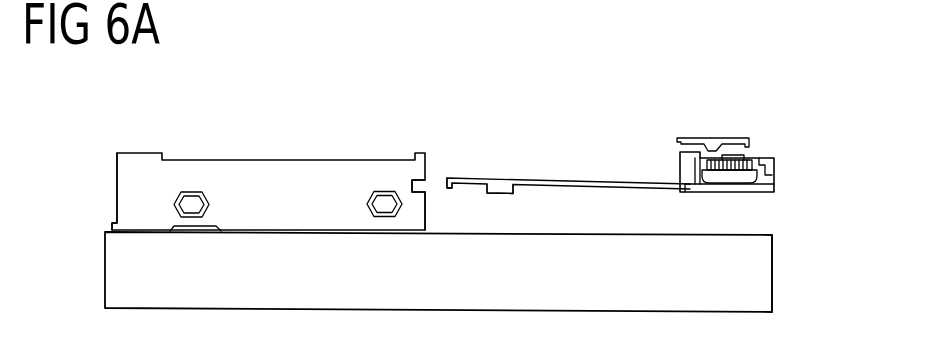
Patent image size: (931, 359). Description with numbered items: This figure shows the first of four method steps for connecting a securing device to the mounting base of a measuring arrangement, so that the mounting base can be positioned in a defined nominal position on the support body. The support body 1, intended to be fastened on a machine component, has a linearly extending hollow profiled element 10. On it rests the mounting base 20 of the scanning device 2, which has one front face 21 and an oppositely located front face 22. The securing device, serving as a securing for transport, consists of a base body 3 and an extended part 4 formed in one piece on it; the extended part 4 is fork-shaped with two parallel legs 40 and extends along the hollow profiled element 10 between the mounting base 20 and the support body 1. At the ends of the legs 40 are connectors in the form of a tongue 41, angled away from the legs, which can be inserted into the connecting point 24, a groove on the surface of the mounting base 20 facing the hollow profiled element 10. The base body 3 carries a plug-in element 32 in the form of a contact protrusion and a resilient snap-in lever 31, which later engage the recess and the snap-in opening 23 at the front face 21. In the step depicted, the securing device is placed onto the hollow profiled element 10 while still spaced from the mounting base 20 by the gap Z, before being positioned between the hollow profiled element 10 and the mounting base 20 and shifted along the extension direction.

The support body 1 is at (784, 309).
The hollow profiled element 10 is at (757, 273).
The scanning device 2 is at (305, 148).
The mounting base 20 is at (232, 183).
The front face 21 is at (427, 207).
The front face 22 is at (117, 198).
The snap-in opening 23 is at (427, 180).
The connecting point 24 is at (175, 228).
The base body 3 is at (725, 116).
The snap-in lever 31 is at (687, 139).
The plug-in element 32 is at (687, 139).
The extended part 4 is at (563, 166).
The legs 40 is at (505, 193).
The tongue 41 is at (447, 178).
The gap Z is at (621, 216).